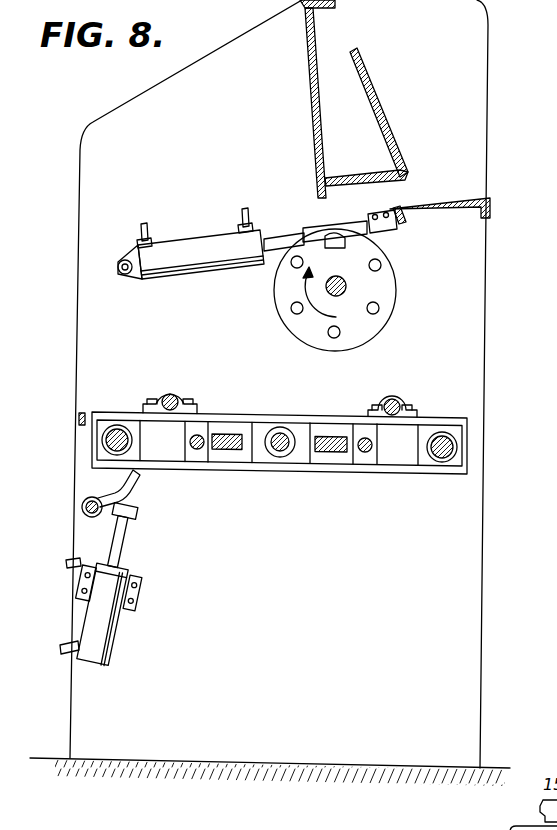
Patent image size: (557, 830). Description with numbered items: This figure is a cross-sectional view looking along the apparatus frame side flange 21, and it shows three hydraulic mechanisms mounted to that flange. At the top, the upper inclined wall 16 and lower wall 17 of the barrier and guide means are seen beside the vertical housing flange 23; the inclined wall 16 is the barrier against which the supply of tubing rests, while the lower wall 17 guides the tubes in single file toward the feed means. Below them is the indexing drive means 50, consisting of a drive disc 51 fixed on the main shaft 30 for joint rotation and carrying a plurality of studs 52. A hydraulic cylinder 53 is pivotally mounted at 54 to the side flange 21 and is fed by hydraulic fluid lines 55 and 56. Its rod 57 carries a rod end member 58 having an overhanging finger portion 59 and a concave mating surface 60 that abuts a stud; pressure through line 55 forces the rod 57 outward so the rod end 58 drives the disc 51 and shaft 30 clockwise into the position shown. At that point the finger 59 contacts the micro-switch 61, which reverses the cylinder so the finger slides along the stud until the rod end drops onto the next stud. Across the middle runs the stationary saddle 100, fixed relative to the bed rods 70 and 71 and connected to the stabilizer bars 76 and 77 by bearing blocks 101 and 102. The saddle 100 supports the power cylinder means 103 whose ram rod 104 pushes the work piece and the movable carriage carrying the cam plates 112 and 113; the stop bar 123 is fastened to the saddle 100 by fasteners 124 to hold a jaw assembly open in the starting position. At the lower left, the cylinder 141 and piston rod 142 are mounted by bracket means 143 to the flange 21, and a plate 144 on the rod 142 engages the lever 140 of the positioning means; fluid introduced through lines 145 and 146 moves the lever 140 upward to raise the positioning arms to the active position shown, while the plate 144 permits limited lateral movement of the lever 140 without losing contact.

The upper inclined wall 16 is at (393, 121).
The lower wall 17 is at (363, 175).
The side flange 21 is at (486, 344).
The vertical housing flange 23 is at (306, 82).
The main shaft 30 is at (346, 288).
The indexing drive means 50 is at (272, 174).
The drive disc 51 is at (370, 330).
The studs 52 is at (334, 338).
The hydraulic cylinder 53 is at (190, 262).
The pivotal mounting 54 is at (122, 278).
The hydraulic fluid line 55 is at (147, 224).
The hydraulic fluid line 56 is at (243, 210).
The rod 57 is at (272, 238).
The rod end member 58 is at (316, 233).
The overhanging finger portion 59 is at (360, 225).
The concave mating surface 60 is at (303, 262).
The micro-switch 61 is at (400, 218).
The bed rod 70 is at (452, 447).
The bed rod 71 is at (101, 440).
The stabilizer bar 76 is at (404, 402).
The stabilizer bar 77 is at (183, 402).
The stationary saddle 100 is at (449, 418).
The bearing block 101 is at (386, 398).
The bearing block 102 is at (163, 395).
The power cylinder means 103 is at (278, 458).
The ram rod 104 is at (280, 426).
The cam plate 112 is at (335, 440).
The cam plate 113 is at (232, 432).
The stop bar 123 is at (197, 452).
The fasteners 124 is at (365, 453).
The lever 140 is at (140, 482).
The cylinder 141 is at (104, 633).
The piston rod 142 is at (130, 541).
The bracket means 143 is at (143, 595).
The plate 144 is at (140, 510).
The hydraulic fluid line 145 is at (70, 565).
The hydraulic fluid line 146 is at (70, 647).